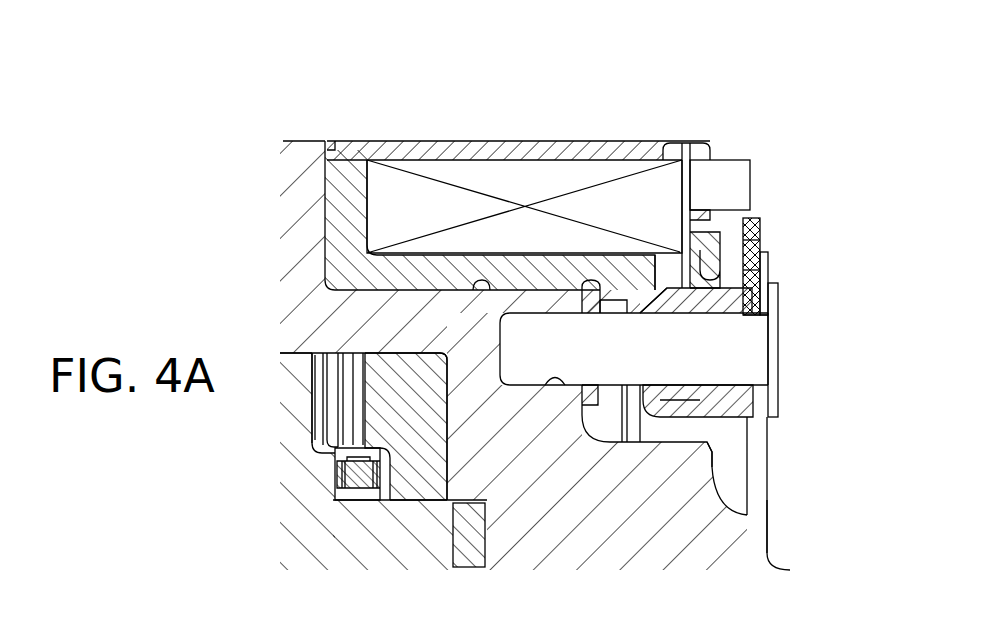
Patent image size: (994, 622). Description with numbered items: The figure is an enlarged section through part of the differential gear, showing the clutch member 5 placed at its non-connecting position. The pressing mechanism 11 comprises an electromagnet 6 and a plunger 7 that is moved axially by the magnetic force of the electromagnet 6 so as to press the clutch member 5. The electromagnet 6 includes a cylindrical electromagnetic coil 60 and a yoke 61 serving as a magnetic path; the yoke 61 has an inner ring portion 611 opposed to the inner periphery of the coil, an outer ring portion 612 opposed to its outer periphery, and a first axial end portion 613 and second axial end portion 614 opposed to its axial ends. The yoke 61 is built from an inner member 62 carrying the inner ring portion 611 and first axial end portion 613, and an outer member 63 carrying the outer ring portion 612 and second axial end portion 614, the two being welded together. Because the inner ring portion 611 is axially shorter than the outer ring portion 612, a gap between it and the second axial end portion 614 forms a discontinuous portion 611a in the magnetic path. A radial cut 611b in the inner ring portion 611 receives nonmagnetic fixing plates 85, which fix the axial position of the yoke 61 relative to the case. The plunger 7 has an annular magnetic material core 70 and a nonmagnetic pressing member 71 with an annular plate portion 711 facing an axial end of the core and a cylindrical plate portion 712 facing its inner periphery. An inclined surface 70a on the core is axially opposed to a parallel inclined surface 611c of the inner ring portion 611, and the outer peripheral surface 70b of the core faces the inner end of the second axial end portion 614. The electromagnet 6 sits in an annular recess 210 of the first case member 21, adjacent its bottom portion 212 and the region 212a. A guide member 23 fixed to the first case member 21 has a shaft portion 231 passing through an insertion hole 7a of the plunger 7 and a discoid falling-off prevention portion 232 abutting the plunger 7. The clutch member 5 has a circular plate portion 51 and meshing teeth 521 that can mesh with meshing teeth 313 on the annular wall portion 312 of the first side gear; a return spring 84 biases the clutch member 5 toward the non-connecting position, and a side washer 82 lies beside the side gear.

The first case member 21 is at (300, 140).
The clutch member 5 is at (418, 503).
The inner member 62 is at (332, 143).
The first axial end portion 613 is at (353, 168).
The inner ring portion 611 is at (407, 273).
The outer ring portion 612 is at (447, 150).
The electromagnetic coil 60 is at (490, 175).
The discontinuous portion 611a is at (655, 258).
The cut 611b is at (598, 274).
The inclined surface 611c is at (683, 210).
The yoke 61 is at (634, 142).
The outer member 63 is at (692, 143).
The second axial end portion 614 is at (708, 210).
The magnetic material core 70 is at (762, 265).
The inclined surface 70a is at (722, 240).
The outer peripheral surface 70b is at (735, 258).
The pressing member 71 is at (766, 254).
The plunger 7 is at (824, 200).
The annular plate portion 711 is at (757, 280).
The guide member 23 is at (779, 322).
The shaft portion 231 is at (748, 342).
The falling-off prevention portion 232 is at (772, 397).
The cylindrical plate portion 712 is at (720, 418).
The fixing plate 85 is at (593, 430).
The housing boss 212a is at (557, 387).
The insertion hole 7a is at (665, 385).
The bottom portion 212 is at (690, 464).
The pressing mechanism 11 is at (804, 413).
The annular recess 210 is at (480, 286).
The circular plate portion 51 is at (400, 368).
The meshing teeth 521 is at (348, 364).
The meshing teeth 313 is at (330, 368).
The annular wall portion 312 is at (297, 367).
The return spring 84 is at (358, 478).
The side washer 82 is at (468, 548).
The electromagnet 6 is at (613, 121).